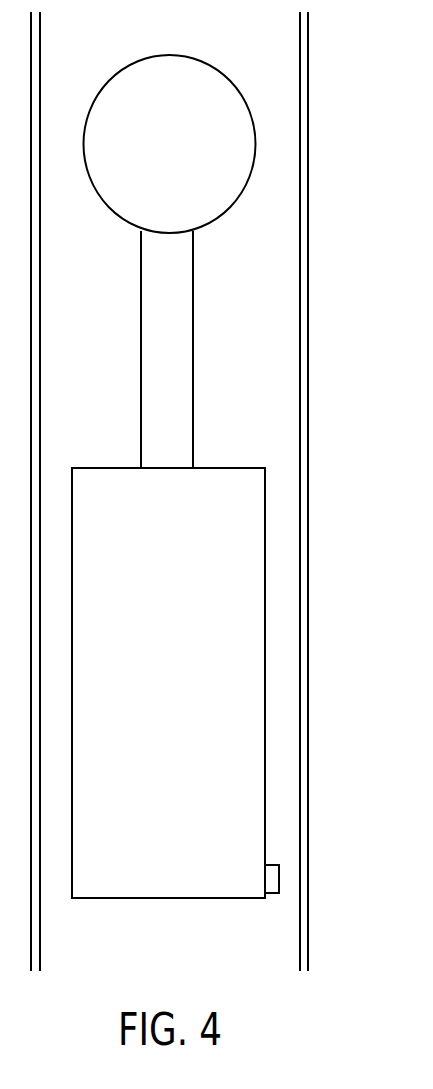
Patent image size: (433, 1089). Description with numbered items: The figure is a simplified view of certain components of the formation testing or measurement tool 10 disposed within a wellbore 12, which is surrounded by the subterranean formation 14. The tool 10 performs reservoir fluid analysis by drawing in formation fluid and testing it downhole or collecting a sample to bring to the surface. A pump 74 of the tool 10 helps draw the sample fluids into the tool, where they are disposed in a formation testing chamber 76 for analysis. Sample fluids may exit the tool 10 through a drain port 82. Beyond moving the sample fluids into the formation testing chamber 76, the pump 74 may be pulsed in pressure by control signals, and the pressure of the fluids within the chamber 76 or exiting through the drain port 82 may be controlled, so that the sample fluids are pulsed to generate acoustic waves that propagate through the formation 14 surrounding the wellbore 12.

The formation testing or measurement tool 10 is at (130, 390).
The wellbore 12 is at (308, 95).
The formation 14 is at (396, 445).
The pump 74 is at (230, 80).
The formation testing chamber 76 is at (227, 493).
The drain port 82 is at (279, 881).